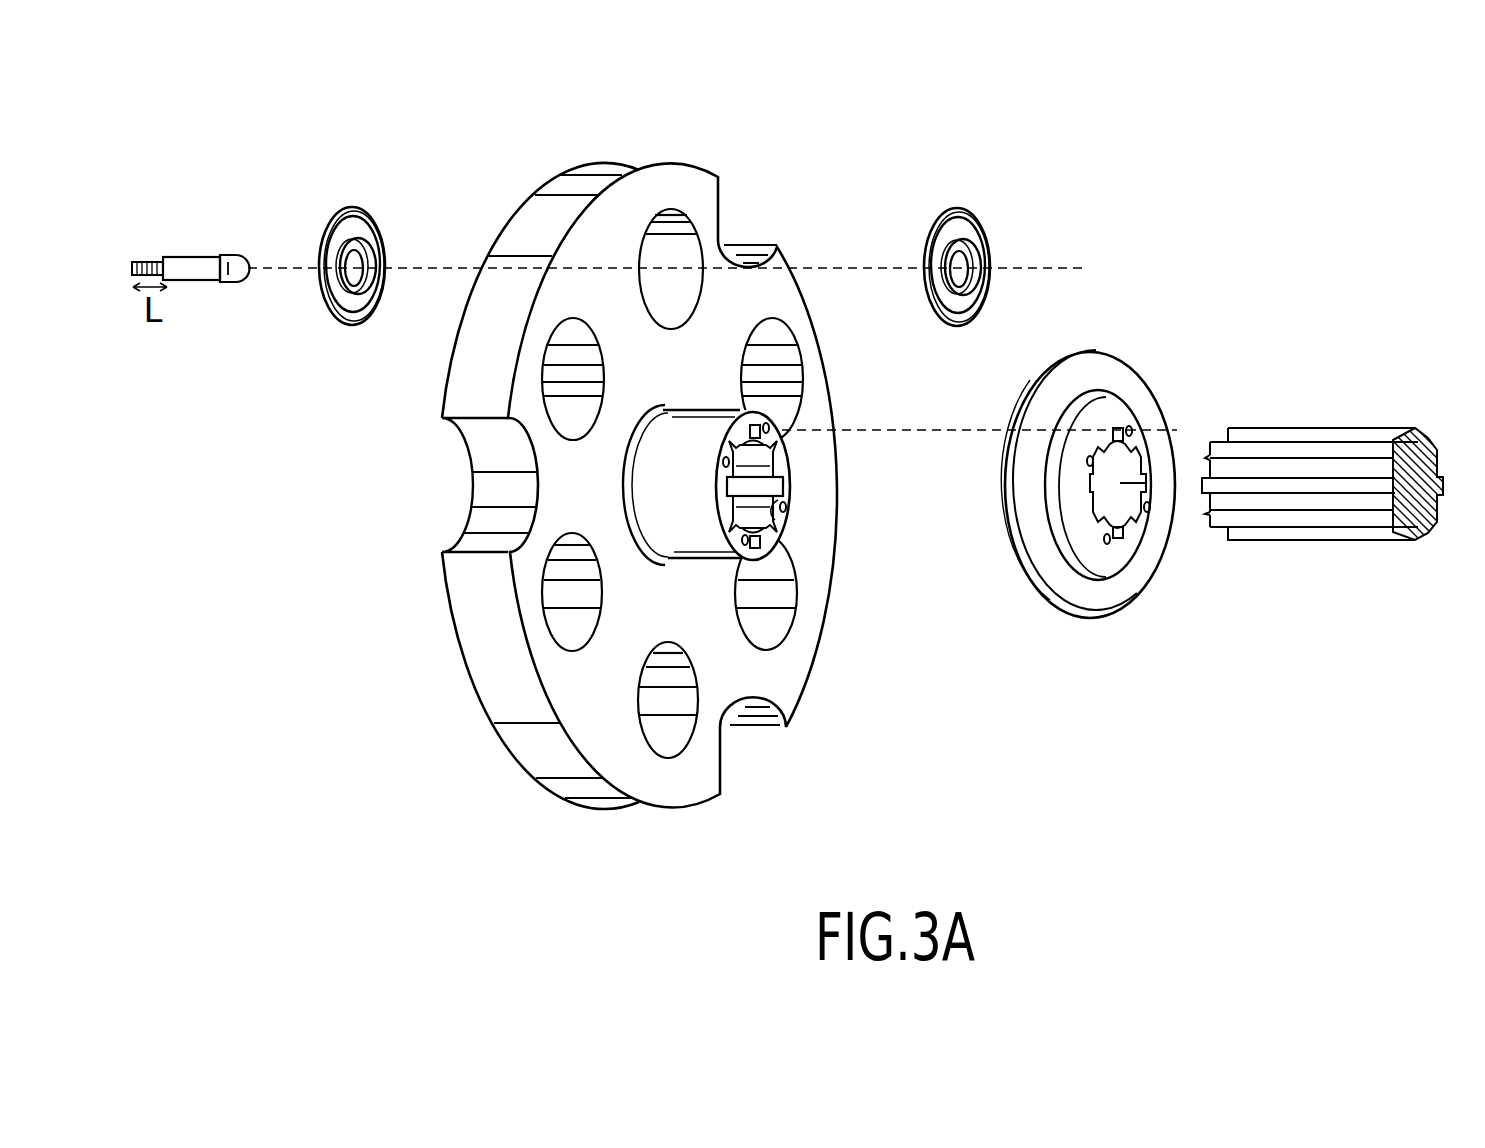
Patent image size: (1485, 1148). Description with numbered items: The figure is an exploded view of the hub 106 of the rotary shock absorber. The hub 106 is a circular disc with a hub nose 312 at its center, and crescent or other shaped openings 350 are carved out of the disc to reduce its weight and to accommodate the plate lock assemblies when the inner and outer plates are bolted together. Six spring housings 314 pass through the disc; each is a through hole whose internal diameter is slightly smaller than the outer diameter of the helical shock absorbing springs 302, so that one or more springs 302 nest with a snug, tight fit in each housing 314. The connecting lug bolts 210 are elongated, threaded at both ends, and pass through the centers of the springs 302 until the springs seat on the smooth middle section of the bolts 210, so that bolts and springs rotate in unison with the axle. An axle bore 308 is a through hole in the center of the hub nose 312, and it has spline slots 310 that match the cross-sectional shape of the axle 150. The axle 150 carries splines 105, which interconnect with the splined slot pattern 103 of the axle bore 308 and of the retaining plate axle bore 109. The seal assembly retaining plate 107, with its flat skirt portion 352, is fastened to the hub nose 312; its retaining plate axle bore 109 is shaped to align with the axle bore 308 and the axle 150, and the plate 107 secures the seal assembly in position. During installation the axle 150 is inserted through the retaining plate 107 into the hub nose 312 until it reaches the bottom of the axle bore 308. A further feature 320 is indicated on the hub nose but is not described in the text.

The connecting lug bolts 210 is at (185, 257).
The helical shock absorbing springs 302 is at (368, 222).
The hub 106 is at (680, 788).
The spring housings 314 is at (666, 243).
The hub nose 312 is at (718, 412).
The axle bore 308 is at (769, 469).
The spline slots 310 is at (784, 493).
The aperture 320 is at (788, 509).
The openings 350 is at (744, 745).
The flat skirt portion 352 is at (1102, 363).
The seal assembly retaining plate 107 is at (1103, 606).
The retaining plate axle bore 109 is at (1147, 484).
The splined slot pattern 103 is at (1118, 536).
The splines 105 is at (1216, 445).
The axle 150 is at (1318, 427).